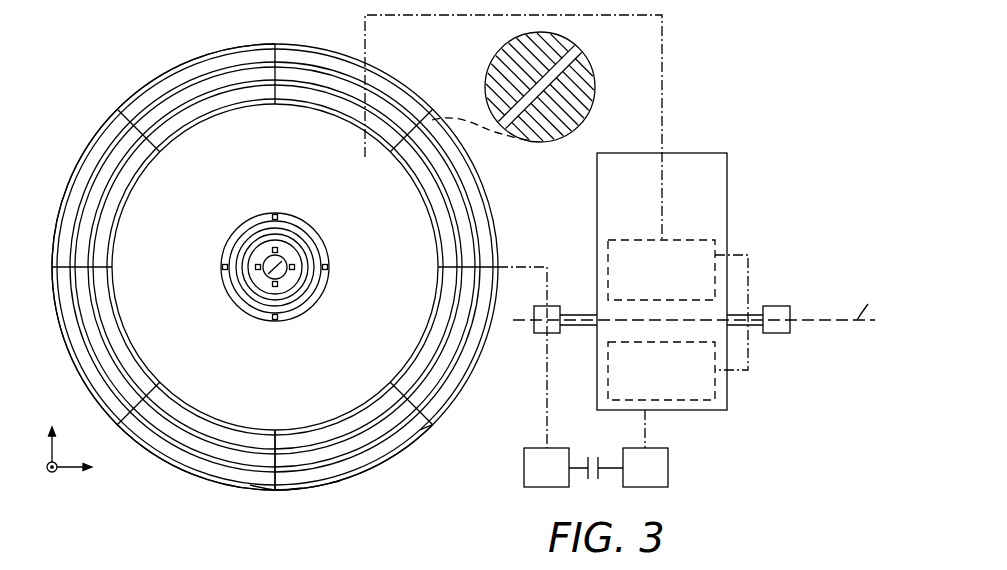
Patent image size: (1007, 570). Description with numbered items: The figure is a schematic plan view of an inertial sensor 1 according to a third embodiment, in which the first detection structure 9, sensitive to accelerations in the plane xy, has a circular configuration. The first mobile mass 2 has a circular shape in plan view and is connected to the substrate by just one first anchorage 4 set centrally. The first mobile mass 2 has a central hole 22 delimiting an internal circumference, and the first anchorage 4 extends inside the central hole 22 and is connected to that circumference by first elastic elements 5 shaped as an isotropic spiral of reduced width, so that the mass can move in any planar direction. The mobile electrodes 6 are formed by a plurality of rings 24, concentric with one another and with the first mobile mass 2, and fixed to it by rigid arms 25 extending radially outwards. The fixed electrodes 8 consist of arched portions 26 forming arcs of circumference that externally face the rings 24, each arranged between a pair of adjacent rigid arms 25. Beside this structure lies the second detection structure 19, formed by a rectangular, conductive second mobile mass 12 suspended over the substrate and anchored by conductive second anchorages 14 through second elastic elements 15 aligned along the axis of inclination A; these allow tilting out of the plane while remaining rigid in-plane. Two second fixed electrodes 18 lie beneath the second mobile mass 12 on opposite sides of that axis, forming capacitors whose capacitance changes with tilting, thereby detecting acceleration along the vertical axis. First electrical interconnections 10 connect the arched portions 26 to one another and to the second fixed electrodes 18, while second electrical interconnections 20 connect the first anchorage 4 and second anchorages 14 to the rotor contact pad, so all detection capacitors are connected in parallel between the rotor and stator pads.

The inertial sensor 1 is at (116, 72).
The first mobile mass 2 is at (158, 187).
The first anchorage 4 is at (278, 263).
The first elastic elements 5 is at (302, 238).
The mobile electrodes 6 is at (281, 495).
The fixed electrodes 8 is at (376, 480).
The first detection structure 9 is at (170, 486).
The first electrical interconnections 10 is at (662, 47).
The second mobile mass 12 is at (717, 165).
The second anchorages 14 is at (536, 327).
The second elastic elements 15 is at (579, 327).
The second fixed electrodes 18 is at (693, 250).
The second detection structure 19 is at (680, 425).
The second electrical interconnections 20 is at (520, 265).
The central hole 22 is at (280, 228).
The rings 24 is at (514, 58).
The rigid arms 25 is at (580, 68).
The arched portions 26 is at (573, 96).